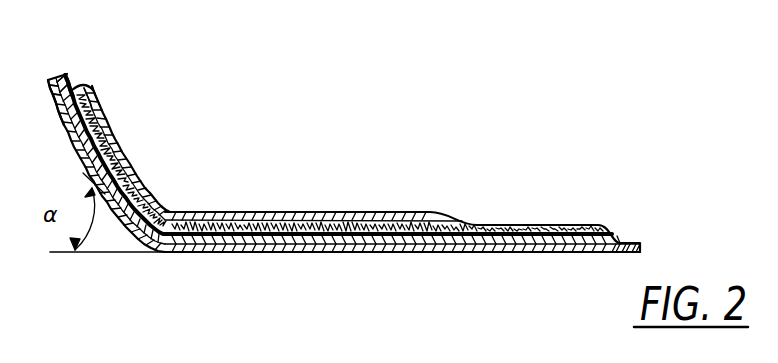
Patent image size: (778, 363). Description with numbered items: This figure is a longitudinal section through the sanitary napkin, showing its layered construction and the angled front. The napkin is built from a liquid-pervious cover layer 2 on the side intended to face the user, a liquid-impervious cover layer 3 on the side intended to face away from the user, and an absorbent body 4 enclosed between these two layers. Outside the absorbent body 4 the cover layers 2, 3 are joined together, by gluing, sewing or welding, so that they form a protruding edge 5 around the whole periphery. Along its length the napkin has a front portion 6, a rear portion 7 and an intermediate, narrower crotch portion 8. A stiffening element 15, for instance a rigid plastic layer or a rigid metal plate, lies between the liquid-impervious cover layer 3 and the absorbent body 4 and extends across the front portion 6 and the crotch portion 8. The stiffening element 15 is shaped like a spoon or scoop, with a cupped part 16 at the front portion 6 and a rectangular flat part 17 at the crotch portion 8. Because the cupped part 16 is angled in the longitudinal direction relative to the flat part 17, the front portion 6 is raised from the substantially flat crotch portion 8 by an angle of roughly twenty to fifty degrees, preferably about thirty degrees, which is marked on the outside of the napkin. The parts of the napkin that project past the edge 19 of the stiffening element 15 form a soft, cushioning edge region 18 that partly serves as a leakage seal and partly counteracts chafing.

The liquid-pervious cover layer 2 is at (435, 213).
The liquid-impervious cover layer 3 is at (508, 250).
The absorbent body 4 is at (518, 228).
The protruding edge 5 is at (626, 240).
The front portion 6 is at (132, 162).
The rear portion 7 is at (580, 250).
The crotch portion 8 is at (263, 212).
The stiffening element 15 is at (388, 243).
The cupped part 16 is at (155, 188).
The flat part 17 is at (252, 243).
The edge region 18 is at (83, 96).
The edge of the stiffening element 19 is at (98, 106).